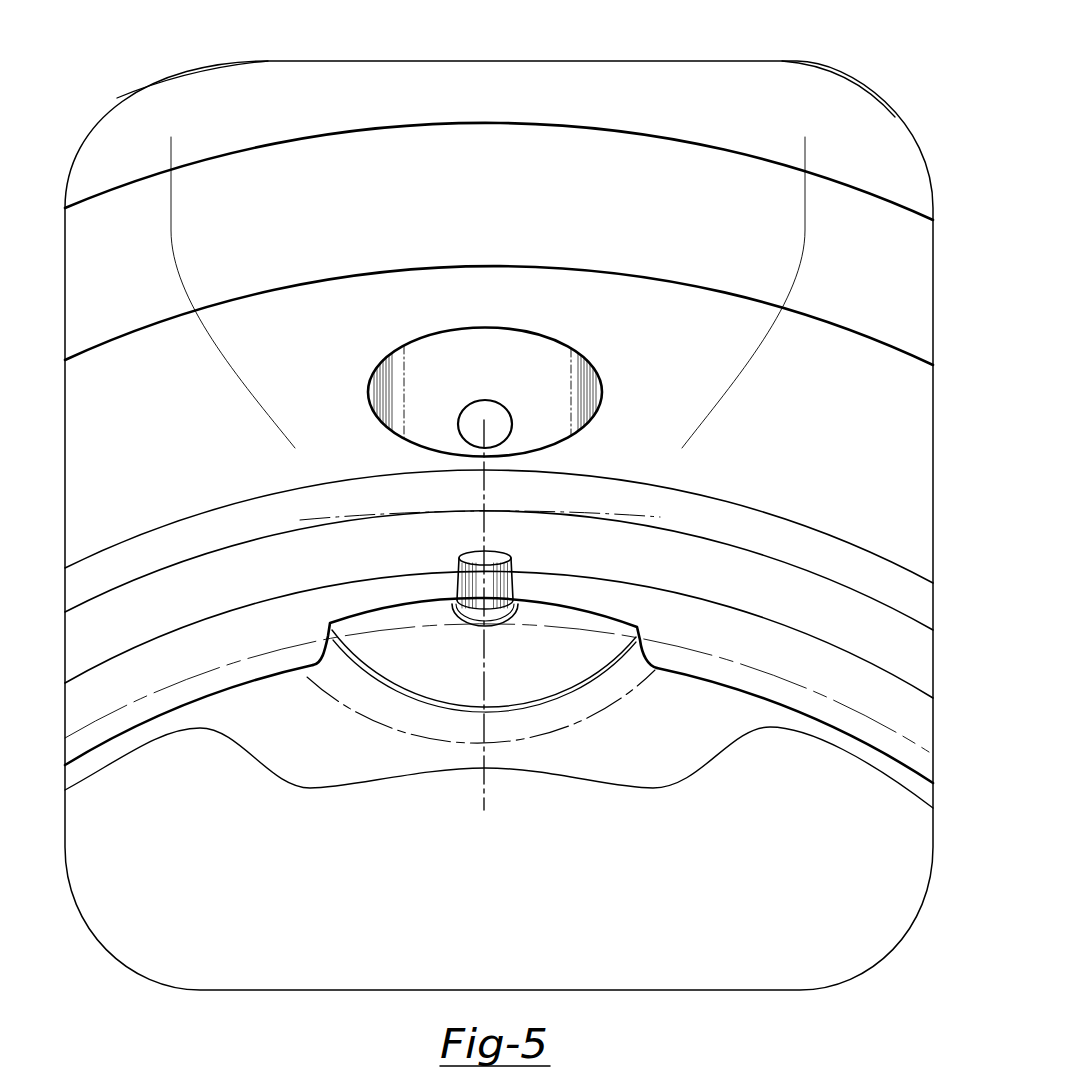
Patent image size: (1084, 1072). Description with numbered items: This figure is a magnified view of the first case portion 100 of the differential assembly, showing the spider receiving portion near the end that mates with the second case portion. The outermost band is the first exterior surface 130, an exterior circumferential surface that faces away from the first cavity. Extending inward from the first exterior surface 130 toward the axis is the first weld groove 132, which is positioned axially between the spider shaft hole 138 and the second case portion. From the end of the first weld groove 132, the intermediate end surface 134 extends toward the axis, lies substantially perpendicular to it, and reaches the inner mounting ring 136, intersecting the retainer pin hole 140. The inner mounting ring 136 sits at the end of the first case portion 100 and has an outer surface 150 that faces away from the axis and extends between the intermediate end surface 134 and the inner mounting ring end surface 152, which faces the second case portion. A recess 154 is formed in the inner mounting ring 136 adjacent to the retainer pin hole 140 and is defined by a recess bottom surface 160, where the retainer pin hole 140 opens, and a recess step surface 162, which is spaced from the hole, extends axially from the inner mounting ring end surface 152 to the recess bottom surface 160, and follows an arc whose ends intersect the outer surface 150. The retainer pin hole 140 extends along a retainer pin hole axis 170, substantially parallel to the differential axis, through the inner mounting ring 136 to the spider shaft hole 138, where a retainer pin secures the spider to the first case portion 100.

The first case portion 100 is at (566, 90).
The first exterior surface 130 is at (831, 419).
The first weld groove 132 is at (682, 513).
The intermediate end surface 134 is at (715, 563).
The inner mounting ring 136 is at (840, 756).
The spider shaft hole 138 is at (455, 363).
The retainer pin hole 140 is at (463, 583).
The outer surface 150 is at (720, 630).
The inner mounting ring end surface 152 is at (681, 755).
The recess 154 is at (543, 633).
The recess bottom surface 160 is at (441, 629).
The recess step surface 162 is at (389, 650).
The retainer pin hole axis 170 is at (478, 798).